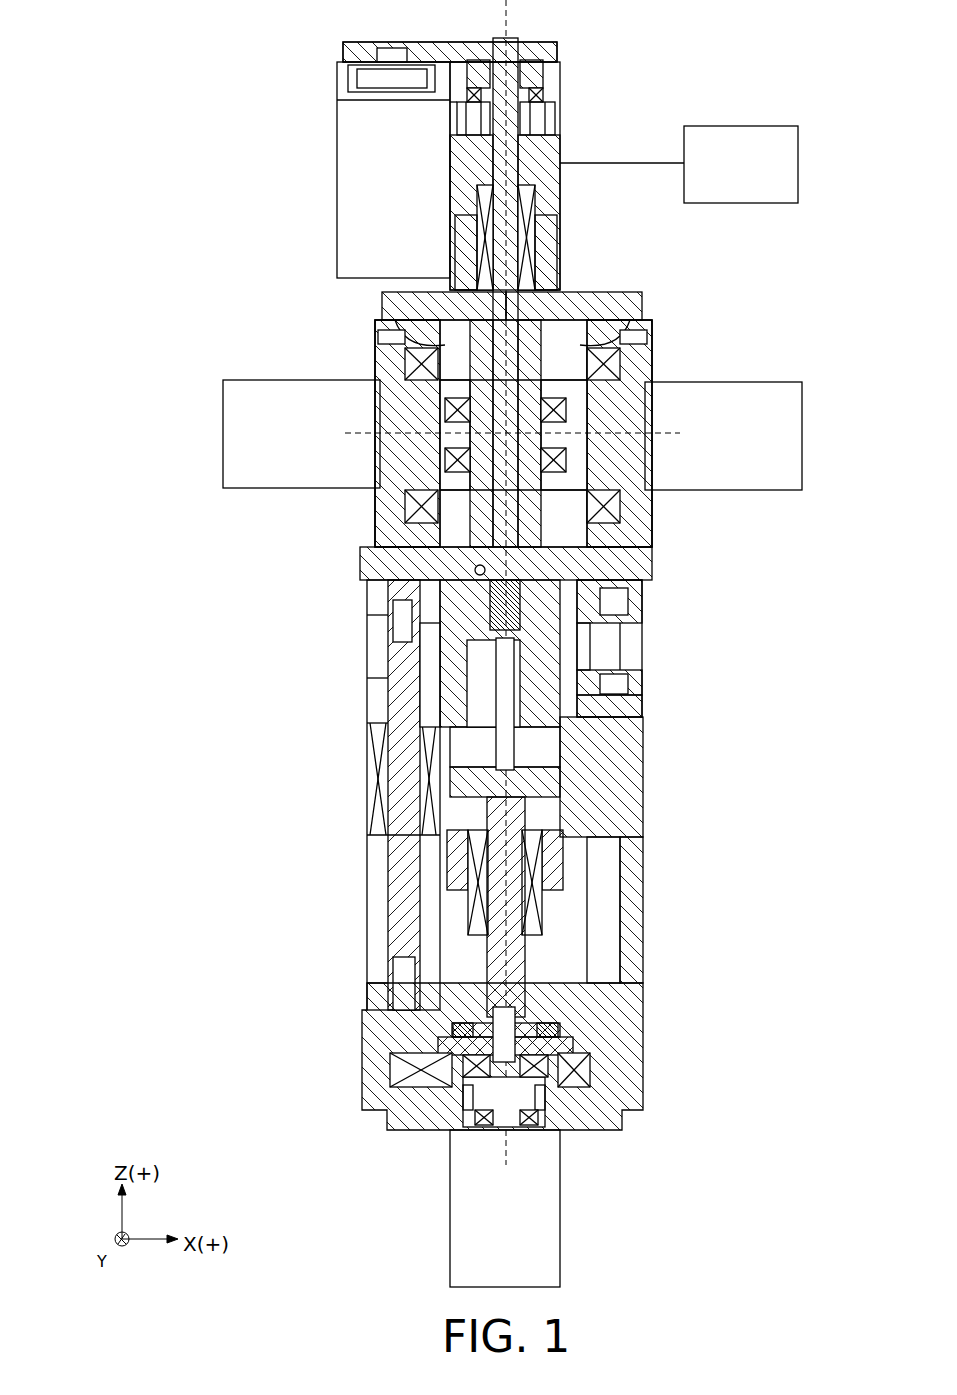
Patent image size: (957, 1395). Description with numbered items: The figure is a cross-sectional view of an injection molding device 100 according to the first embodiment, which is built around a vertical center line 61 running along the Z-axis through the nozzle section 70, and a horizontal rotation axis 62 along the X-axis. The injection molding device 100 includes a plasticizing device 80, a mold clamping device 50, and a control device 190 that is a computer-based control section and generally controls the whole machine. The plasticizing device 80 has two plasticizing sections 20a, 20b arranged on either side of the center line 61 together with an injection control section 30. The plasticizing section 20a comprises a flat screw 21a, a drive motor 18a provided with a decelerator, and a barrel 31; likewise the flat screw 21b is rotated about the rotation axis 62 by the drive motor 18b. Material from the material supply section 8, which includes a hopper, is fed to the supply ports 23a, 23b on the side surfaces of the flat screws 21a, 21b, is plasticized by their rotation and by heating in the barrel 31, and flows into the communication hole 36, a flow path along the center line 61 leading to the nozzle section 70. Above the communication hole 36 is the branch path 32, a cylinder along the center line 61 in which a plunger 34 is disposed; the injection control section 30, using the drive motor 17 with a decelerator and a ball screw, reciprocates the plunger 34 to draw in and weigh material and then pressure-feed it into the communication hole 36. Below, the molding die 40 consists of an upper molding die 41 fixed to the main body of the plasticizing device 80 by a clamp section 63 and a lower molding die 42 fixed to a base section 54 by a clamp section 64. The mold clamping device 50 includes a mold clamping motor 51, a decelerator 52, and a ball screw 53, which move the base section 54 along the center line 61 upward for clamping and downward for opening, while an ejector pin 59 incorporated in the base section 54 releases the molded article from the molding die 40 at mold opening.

The injection molding device 100 is at (775, 72).
The plasticizing device 80 is at (629, 91).
The injection control section 30 is at (570, 131).
The control device 190 is at (735, 127).
The drive motor 17 is at (342, 190).
The center line 61 is at (510, 12).
The plunger 34 is at (560, 240).
The branch path 32 is at (545, 300).
The material supply section 8 is at (611, 275).
The plasticizing section 20a is at (703, 297).
The plasticizing section 20b is at (286, 305).
The supply port 23a is at (625, 302).
The supply port 23b is at (382, 300).
The flat screw 21a is at (620, 355).
The flat screw 21b is at (400, 352).
The barrel 31 is at (625, 408).
The drive motor 18a is at (735, 480).
The drive motor 18b is at (290, 478).
The rotation axis 62 is at (368, 437).
The communication hole 36 is at (640, 560).
The nozzle section 70 is at (455, 632).
The ejector pin 59 is at (450, 712).
The clamp section 63 is at (642, 615).
The upper molding die 41 is at (592, 628).
The lower molding die 42 is at (600, 682).
The molding die 40 is at (728, 648).
The clamp section 64 is at (645, 715).
The base section 54 is at (645, 800).
The mold clamping device 50 is at (756, 805).
The ball screw 53 is at (528, 962).
The decelerator 52 is at (605, 1062).
The mold clamping motor 51 is at (540, 1175).